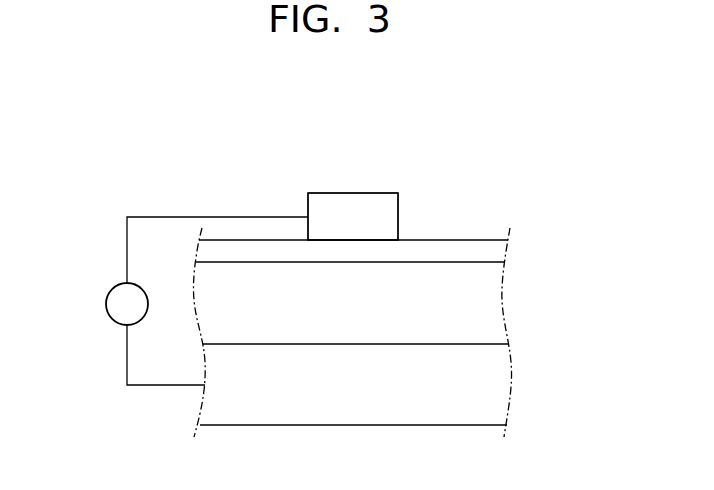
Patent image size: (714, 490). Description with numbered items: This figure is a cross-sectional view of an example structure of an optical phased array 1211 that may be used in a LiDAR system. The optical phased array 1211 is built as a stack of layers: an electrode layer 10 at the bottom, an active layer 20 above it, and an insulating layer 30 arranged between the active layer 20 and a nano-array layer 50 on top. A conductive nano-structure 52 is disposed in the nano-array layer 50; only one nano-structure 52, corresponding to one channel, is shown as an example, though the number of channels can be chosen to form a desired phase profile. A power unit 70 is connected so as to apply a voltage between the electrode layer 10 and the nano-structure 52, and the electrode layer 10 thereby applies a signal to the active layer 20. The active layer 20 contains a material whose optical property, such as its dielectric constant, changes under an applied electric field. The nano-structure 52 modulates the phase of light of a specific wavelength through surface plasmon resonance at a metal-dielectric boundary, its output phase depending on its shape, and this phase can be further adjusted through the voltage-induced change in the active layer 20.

The optical phased array 1211 is at (529, 130).
The electrode layer 10 is at (490, 384).
The active layer 20 is at (490, 304).
The insulating layer 30 is at (490, 250).
The nano-array layer 50 is at (403, 215).
The conductive nano-structure 52 is at (355, 203).
The power unit 70 is at (105, 304).